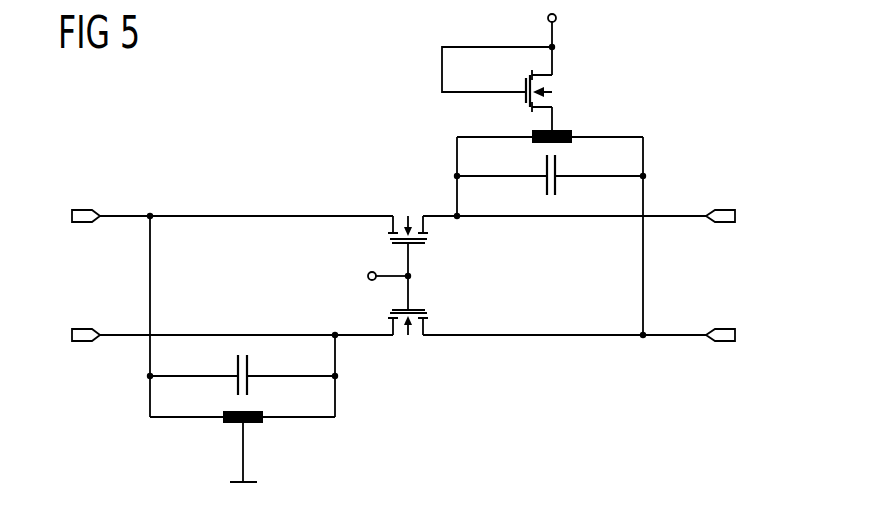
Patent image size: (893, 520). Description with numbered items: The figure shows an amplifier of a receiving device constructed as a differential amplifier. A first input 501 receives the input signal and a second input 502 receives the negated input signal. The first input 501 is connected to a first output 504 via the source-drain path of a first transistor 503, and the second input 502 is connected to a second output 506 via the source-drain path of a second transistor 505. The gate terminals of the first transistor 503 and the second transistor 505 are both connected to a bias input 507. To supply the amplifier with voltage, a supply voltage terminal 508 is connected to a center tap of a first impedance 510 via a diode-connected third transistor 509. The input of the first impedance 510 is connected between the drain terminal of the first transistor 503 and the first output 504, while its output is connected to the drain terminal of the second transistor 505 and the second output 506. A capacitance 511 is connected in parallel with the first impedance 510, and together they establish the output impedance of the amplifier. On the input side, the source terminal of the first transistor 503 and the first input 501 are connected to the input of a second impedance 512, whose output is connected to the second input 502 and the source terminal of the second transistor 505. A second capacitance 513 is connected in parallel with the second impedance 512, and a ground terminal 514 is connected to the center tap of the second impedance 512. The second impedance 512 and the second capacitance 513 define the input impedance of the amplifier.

The first input 501 is at (83, 206).
The second input 502 is at (83, 325).
The first transistor 503 is at (417, 245).
The first output 504 is at (724, 208).
The second transistor 505 is at (430, 313).
The second output 506 is at (724, 328).
The bias input 507 is at (367, 276).
The supply voltage terminal 508 is at (557, 18).
The third transistor 509 is at (525, 84).
The first impedance 510 is at (563, 129).
The capacitance 511 is at (557, 185).
The second impedance 512 is at (232, 425).
The second capacitance 513 is at (250, 366).
The ground terminal 514 is at (252, 480).